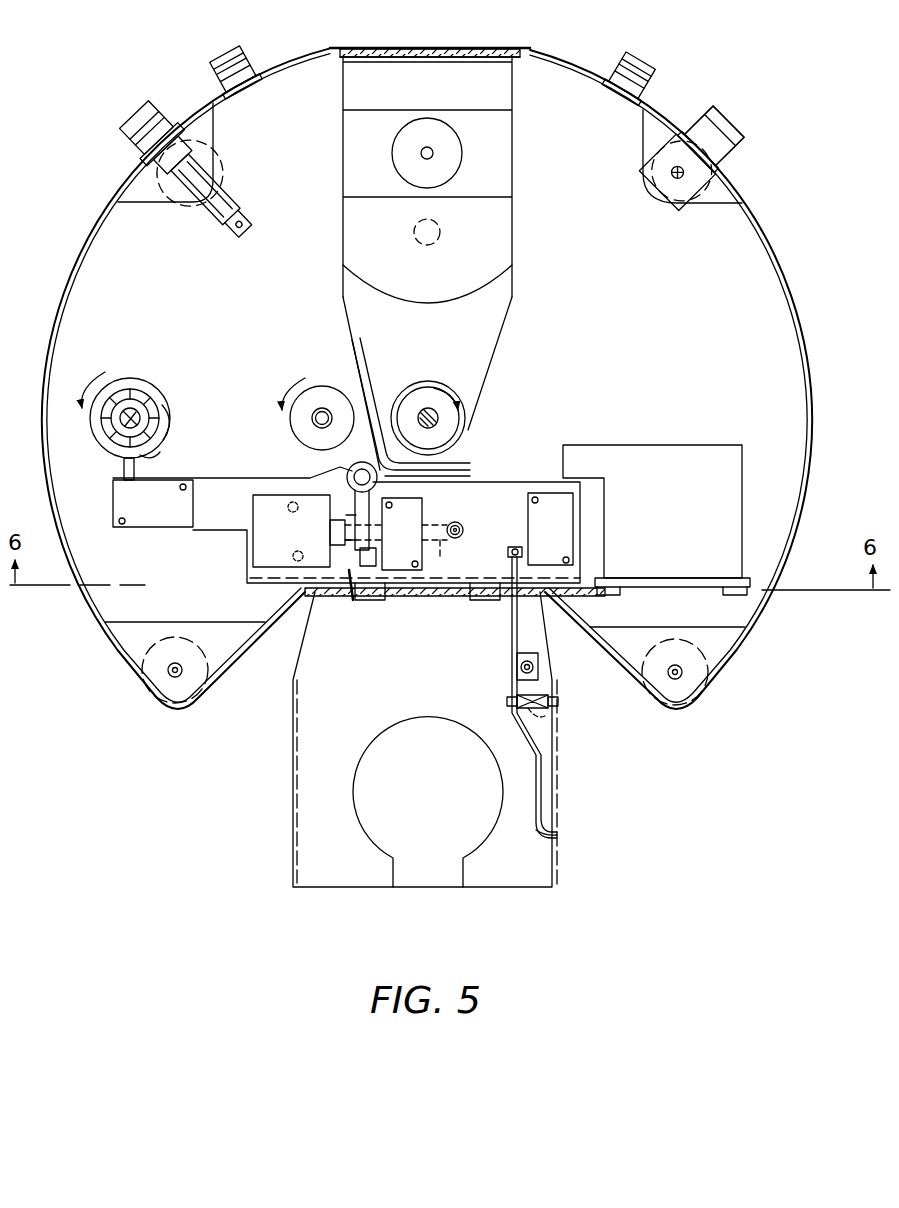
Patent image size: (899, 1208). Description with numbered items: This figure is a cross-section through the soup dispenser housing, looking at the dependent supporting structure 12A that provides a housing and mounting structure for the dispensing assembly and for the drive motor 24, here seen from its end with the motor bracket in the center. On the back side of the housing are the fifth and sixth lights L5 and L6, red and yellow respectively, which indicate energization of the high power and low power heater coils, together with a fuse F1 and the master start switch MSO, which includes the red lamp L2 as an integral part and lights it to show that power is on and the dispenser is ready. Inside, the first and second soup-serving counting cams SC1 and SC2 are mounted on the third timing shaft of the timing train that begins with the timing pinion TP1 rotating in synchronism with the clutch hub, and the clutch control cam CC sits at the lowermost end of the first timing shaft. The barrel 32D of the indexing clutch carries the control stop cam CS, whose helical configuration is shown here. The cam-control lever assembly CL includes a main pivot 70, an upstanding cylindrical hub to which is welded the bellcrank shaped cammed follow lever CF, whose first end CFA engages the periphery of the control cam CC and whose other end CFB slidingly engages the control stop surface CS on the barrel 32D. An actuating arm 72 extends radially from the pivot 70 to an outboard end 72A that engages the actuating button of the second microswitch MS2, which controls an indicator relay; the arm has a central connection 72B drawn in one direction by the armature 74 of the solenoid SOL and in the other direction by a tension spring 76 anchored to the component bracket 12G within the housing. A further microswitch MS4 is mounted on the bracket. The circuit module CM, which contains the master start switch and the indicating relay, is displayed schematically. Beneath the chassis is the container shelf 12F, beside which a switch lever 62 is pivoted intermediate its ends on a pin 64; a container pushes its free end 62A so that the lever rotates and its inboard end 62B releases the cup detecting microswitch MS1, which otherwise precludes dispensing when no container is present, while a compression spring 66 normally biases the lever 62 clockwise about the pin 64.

The dependent supporting structure 12A is at (772, 228).
The drive motor 24 is at (500, 157).
The fifth light L5 is at (236, 58).
The sixth light L6 is at (638, 62).
The fuse F1 is at (135, 148).
The master start switch MSO is at (714, 110).
The red lamp L2 is at (748, 111).
The first soup-serving counting cam SC1 is at (134, 378).
The second soup-serving counting cam SC2 is at (150, 460).
The clutch control cam CC is at (340, 385).
The timing pinion TP1 is at (312, 418).
The barrel 32D is at (470, 422).
The other end of cammed follow lever CFB is at (403, 450).
The first end of cammed follow lever CFA is at (350, 356).
The cammed follow lever CF is at (362, 388).
The control stop cam CS is at (456, 470).
The main pivot 70 is at (378, 483).
The cam-control lever assembly CL is at (345, 497).
The component bracket 12G is at (262, 478).
The microswitch MS4 is at (175, 516).
The solenoid SOL is at (317, 531).
The armature 74 is at (305, 509).
The central connection 72B is at (355, 545).
The actuating arm 72 is at (400, 512).
The second microswitch MS2 is at (401, 534).
The tension spring 76 is at (438, 548).
The cup detecting microswitch MS1 is at (550, 529).
The circuit module CM is at (688, 528).
The container shelf 12F is at (380, 702).
The outboard end 72A is at (348, 572).
The switch lever 62 is at (540, 768).
The free end 62A is at (560, 834).
The inboard end 62B is at (520, 530).
The pin 64 is at (538, 662).
The compression spring 66 is at (545, 720).